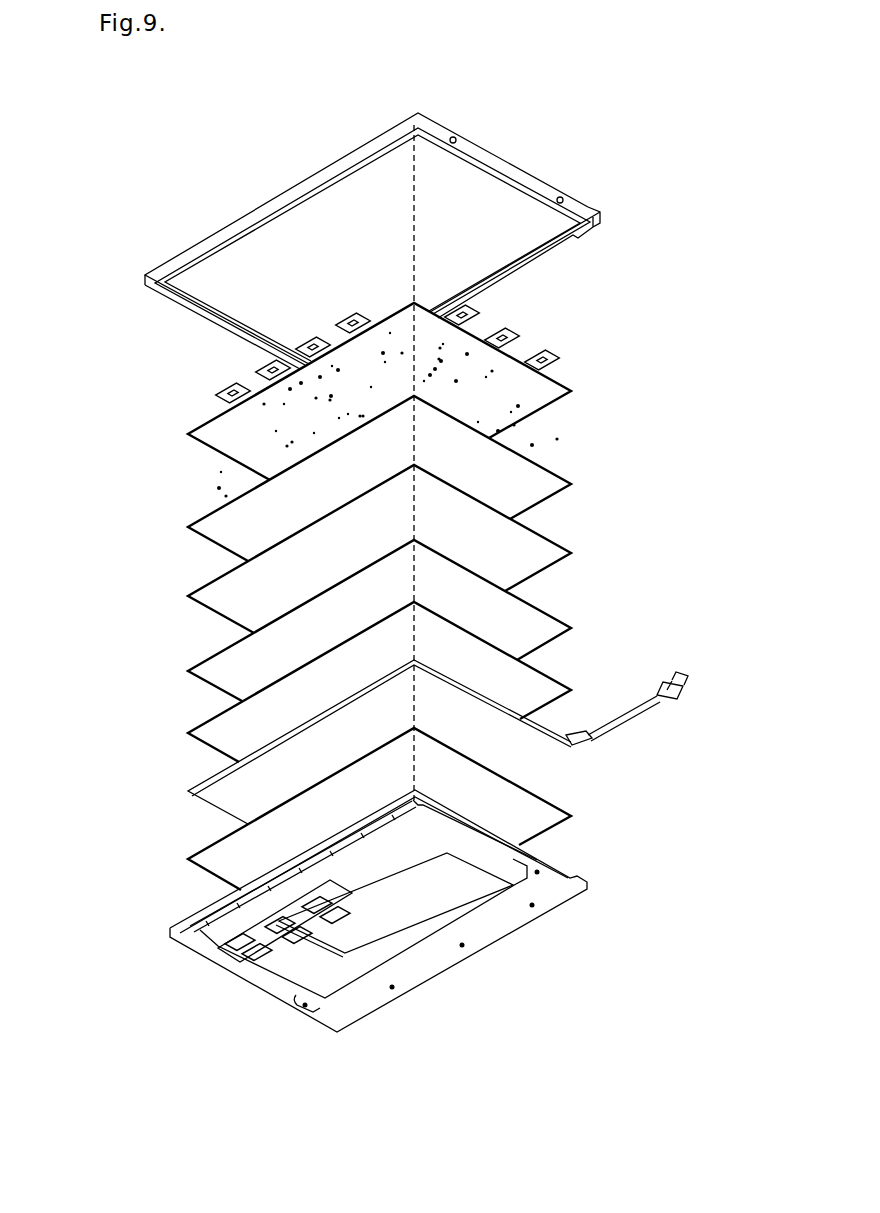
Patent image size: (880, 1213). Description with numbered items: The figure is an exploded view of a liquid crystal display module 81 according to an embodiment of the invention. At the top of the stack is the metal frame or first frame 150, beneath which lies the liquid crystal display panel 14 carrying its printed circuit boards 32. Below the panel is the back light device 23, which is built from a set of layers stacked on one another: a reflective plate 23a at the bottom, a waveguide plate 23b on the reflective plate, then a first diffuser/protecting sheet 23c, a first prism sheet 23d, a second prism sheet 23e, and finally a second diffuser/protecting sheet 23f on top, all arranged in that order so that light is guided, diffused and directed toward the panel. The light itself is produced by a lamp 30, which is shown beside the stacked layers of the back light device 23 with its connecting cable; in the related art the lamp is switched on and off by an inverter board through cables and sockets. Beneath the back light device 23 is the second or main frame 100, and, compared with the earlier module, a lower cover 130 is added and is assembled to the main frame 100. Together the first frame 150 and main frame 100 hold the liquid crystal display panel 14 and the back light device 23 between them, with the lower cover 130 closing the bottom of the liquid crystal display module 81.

The liquid crystal display module 81 is at (397, 558).
The first frame 150 is at (493, 148).
The printed circuit boards 32 is at (549, 352).
The liquid crystal display panel 14 is at (543, 400).
The back light device 23 is at (88, 830).
The reflective plate 23a is at (220, 861).
The waveguide plate 23b is at (219, 787).
The first diffuser/protecting sheet 23c is at (223, 725).
The first prism sheet 23d is at (225, 665).
The second prism sheet 23e is at (221, 595).
The second diffuser/protecting sheet 23f is at (236, 512).
The lamp 30 is at (667, 700).
The lower cover 130 is at (503, 927).
The main frame 100 is at (262, 982).